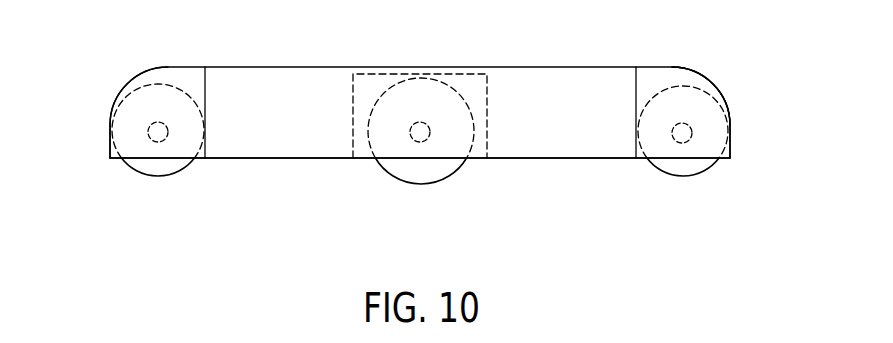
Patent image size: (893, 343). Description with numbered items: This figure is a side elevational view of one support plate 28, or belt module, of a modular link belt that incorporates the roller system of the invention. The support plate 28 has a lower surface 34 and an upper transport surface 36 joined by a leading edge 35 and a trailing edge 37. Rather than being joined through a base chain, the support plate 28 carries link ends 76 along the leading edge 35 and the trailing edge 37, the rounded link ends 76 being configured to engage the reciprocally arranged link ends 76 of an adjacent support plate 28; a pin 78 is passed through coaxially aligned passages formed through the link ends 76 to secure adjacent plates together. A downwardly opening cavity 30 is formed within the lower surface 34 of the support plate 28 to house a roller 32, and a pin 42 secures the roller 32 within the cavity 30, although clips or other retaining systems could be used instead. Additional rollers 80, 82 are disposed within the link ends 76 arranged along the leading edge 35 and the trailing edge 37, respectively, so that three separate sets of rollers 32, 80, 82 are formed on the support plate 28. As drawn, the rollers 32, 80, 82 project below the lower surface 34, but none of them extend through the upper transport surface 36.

The support plate 28 is at (725, 80).
The cavity 30 is at (488, 100).
The roller 32 is at (420, 185).
The lower surface 34 is at (262, 175).
The leading edge 35 is at (83, 123).
The upper transport surface 36 is at (284, 50).
The trailing edge 37 is at (745, 120).
The pin 42 is at (421, 121).
The link end 76 is at (197, 67).
The pin 78 is at (149, 127).
The roller 80 is at (158, 178).
The roller 82 is at (680, 177).